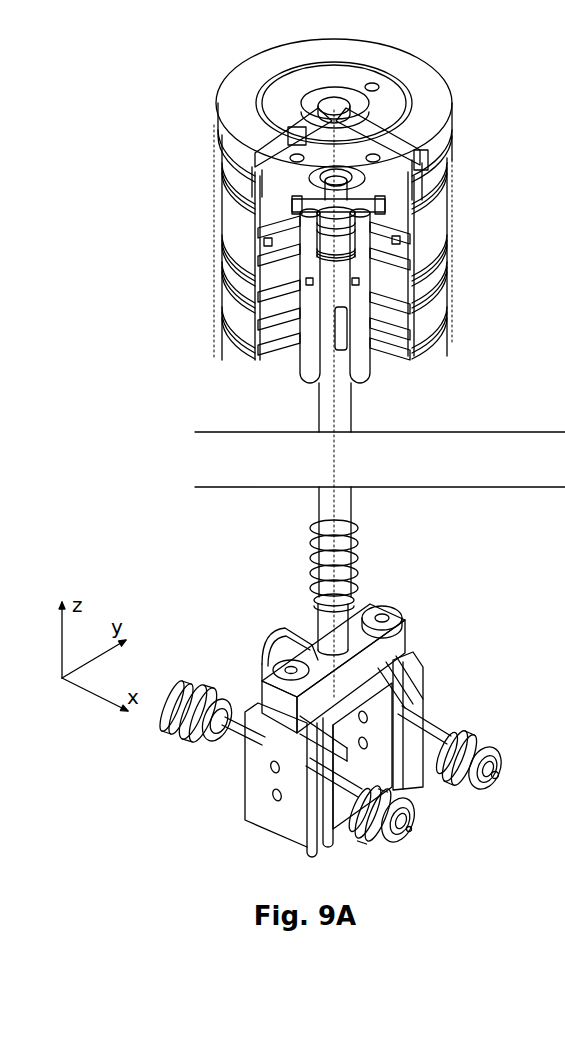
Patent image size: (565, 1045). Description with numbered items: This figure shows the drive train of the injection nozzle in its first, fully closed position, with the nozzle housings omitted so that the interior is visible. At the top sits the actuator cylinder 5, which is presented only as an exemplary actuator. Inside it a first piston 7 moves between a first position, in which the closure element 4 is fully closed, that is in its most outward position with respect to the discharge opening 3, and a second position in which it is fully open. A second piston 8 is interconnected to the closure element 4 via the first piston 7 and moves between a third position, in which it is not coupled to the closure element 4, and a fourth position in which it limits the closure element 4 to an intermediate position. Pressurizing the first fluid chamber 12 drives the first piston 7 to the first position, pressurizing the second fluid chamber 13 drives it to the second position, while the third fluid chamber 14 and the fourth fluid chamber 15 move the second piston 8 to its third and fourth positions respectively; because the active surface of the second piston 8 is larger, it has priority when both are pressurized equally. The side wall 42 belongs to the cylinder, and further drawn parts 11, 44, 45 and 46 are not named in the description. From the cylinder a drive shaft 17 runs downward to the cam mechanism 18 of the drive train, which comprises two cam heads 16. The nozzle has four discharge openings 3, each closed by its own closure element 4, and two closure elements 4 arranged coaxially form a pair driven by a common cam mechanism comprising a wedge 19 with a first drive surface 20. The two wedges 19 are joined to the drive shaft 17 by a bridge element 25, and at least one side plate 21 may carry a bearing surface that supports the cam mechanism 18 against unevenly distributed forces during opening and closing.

The discharge opening 3 is at (331, 769).
The closure element 4 is at (508, 816).
The actuator cylinder 5 is at (292, 188).
The first piston 7 is at (419, 108).
The second piston 8 is at (449, 336).
The fork tubes / bracket 11 is at (394, 254).
The first fluid chamber 12 is at (287, 215).
The second fluid chamber 13 is at (287, 205).
The third fluid chamber 14 is at (287, 273).
The fourth fluid chamber 15 is at (453, 225).
The cam head 16 is at (374, 768).
The drive shaft 17 is at (361, 519).
The cam mechanism 18 is at (399, 660).
The wedge 19 is at (332, 708).
The first drive surface 20 is at (243, 772).
The side plate 21 is at (434, 667).
The bridge element 25 is at (223, 593).
The side wall 42 is at (214, 223).
The lower ring 44 is at (214, 336).
The cross arm 45 is at (395, 120).
The right ring insert 46 is at (453, 273).